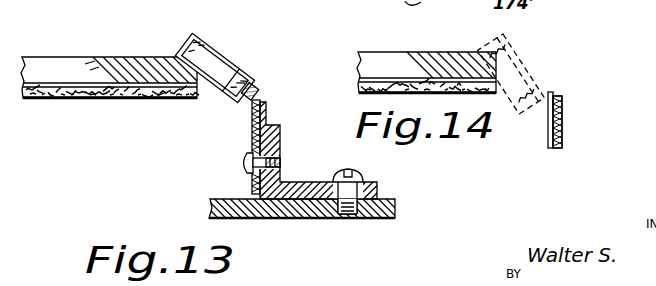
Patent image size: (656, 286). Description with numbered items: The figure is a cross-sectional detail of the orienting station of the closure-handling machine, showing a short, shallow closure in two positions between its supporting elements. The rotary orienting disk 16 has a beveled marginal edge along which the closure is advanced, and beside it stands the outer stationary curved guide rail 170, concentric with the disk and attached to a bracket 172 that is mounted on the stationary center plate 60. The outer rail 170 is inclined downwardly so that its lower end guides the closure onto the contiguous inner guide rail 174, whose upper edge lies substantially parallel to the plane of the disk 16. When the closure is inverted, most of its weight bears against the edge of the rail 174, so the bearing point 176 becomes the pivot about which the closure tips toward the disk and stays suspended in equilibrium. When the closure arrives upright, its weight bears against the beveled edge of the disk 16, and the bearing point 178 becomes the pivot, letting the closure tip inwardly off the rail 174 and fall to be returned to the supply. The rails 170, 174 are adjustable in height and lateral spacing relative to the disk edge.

In FIG. 13, the rotary orienting disk 16 is at (113, 57).
In FIG. 14, the rotary orienting disk 16 is at (393, 52).
In FIG. 13, the circular metal plate 60 is at (285, 218).
In FIG. 13, the outer stationary curved guide rail 170 is at (266, 123).
In FIG. 14, the outer stationary curved guide rail 170 is at (563, 109).
In FIG. 13, the bracket 172 is at (280, 146).
In FIG. 13, the inner guide rail 174 is at (250, 129).
In FIG. 14, the inner guide rail 174 is at (548, 132).
In FIG. 13, the bearing point 176 is at (248, 84).
In FIG. 14, the bearing point 178 is at (501, 73).